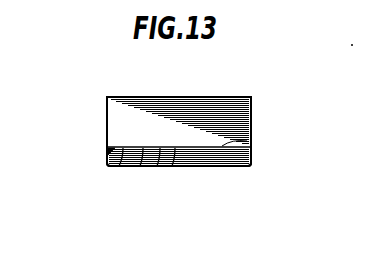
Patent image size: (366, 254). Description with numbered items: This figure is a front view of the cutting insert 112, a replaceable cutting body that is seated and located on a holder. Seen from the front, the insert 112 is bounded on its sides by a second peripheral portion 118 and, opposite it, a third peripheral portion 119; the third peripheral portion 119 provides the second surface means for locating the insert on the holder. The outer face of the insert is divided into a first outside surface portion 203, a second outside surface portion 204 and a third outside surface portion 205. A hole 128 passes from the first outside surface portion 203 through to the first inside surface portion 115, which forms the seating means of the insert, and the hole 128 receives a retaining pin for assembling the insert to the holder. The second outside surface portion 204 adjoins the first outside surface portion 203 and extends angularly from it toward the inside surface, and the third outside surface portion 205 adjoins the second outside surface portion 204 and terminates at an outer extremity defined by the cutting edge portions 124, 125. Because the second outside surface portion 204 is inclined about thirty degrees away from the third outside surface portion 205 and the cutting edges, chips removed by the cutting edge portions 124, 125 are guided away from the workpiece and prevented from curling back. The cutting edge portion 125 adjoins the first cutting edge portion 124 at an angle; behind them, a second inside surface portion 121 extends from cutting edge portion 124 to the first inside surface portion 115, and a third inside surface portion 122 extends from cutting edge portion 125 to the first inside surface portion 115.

The cutting insert 112 is at (130, 93).
The hole 128 is at (170, 97).
The first outside surface portion 203 is at (229, 97).
The second peripheral portion 118 is at (252, 103).
The second outside surface portion 204 is at (252, 125).
The third outside surface portion 205 is at (252, 148).
The third peripheral portion 119 is at (107, 128).
The third inside surface portion 122 is at (108, 164).
The cutting edge portion 125 is at (130, 167).
The cutting edge portion 124 is at (165, 168).
The first inside surface portion 115 is at (207, 168).
The second inside surface portion 121 is at (244, 156).